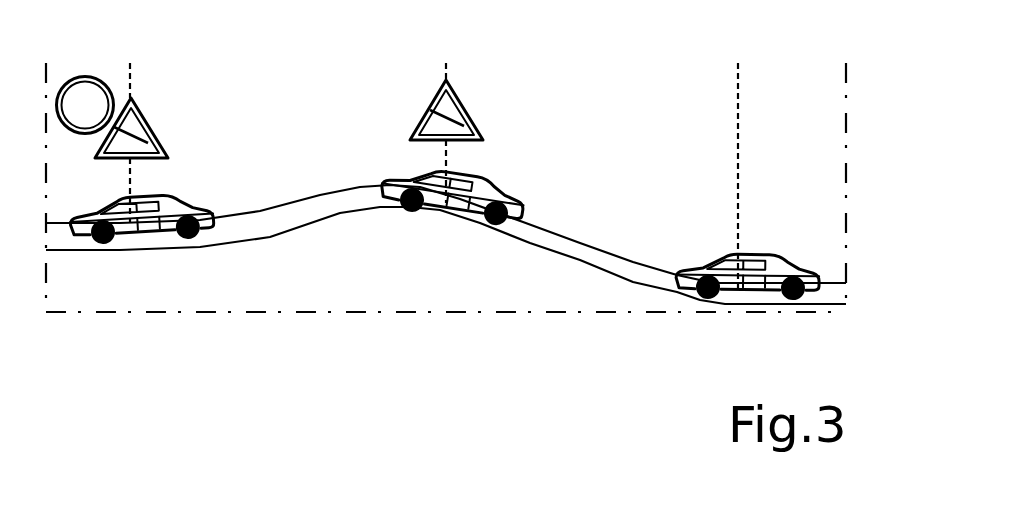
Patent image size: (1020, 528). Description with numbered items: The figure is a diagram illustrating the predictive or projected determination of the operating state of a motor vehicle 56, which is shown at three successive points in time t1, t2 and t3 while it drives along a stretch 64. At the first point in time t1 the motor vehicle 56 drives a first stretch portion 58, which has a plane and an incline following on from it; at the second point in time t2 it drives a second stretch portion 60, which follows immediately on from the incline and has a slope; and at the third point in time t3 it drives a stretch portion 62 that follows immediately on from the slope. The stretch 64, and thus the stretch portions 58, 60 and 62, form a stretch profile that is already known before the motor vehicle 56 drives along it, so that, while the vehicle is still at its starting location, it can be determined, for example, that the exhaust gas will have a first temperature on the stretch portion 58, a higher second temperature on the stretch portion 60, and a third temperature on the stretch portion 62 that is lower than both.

The motor vehicle 56 is at (150, 223).
The first stretch portion 58 is at (120, 278).
The second stretch portion 60 is at (325, 278).
The third stretch portion 62 is at (765, 322).
The stretch 64 is at (852, 307).
The first point in time t1 is at (185, 150).
The second point in time t2 is at (510, 150).
The third point in time t3 is at (765, 230).